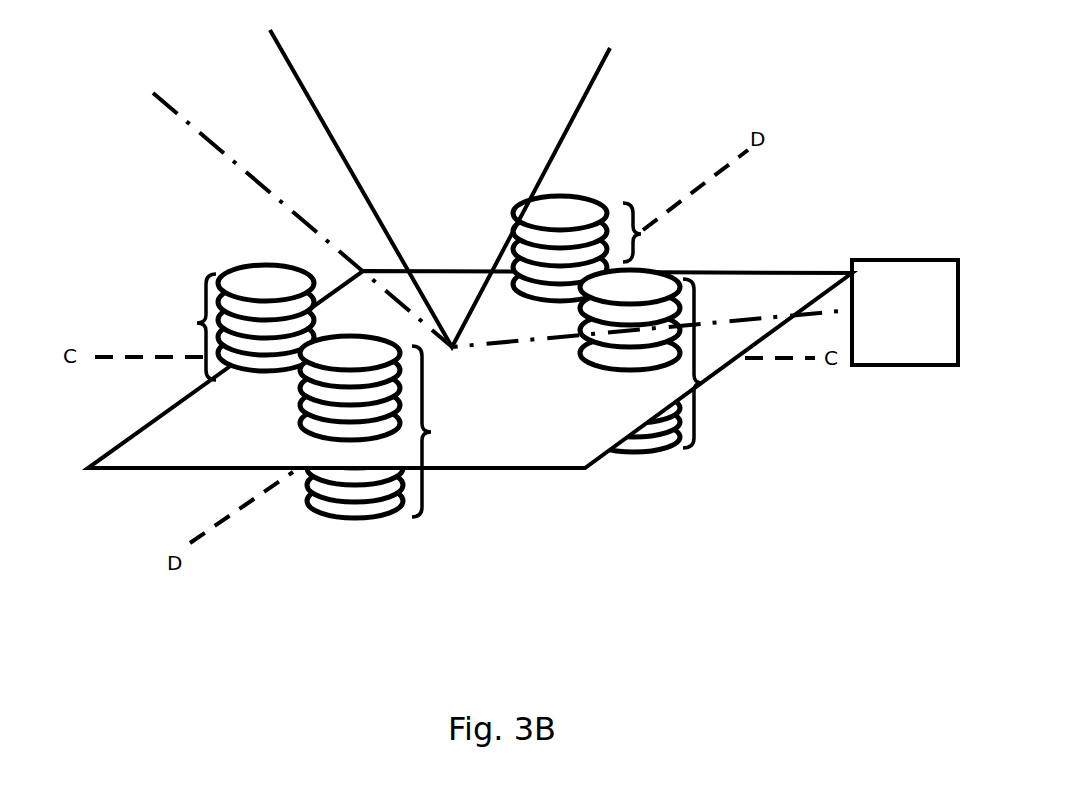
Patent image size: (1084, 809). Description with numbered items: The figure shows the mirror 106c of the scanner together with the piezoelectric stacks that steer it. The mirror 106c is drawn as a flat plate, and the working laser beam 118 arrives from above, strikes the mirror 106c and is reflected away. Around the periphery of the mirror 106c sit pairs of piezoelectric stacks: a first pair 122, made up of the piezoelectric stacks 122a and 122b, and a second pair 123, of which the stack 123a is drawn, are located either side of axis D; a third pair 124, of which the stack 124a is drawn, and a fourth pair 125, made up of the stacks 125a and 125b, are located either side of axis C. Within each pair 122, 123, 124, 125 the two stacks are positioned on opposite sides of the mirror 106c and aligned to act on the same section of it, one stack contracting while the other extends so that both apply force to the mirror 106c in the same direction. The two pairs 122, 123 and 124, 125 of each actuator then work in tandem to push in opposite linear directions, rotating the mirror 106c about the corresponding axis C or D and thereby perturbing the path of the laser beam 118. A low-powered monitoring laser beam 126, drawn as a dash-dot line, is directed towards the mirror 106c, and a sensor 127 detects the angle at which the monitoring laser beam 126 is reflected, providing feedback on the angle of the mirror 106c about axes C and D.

The laser beam 118 is at (314, 98).
The monitoring laser beam 126 is at (163, 105).
The piezoelectric stack 124a is at (241, 271).
The pair of piezoelectric stacks 124 is at (184, 327).
The piezoelectric stack 122a is at (335, 402).
The piezoelectric stack 122b is at (373, 508).
The pair of piezoelectric stacks 122 is at (448, 431).
The mirror 106c is at (533, 395).
The piezoelectric stack 123a is at (514, 212).
The pair of piezoelectric stacks 123 is at (661, 232).
The piezoelectric stack 125a is at (656, 288).
The piezoelectric stack 125b is at (660, 450).
The pair of piezoelectric stacks 125 is at (719, 363).
The sensor 127 is at (896, 264).